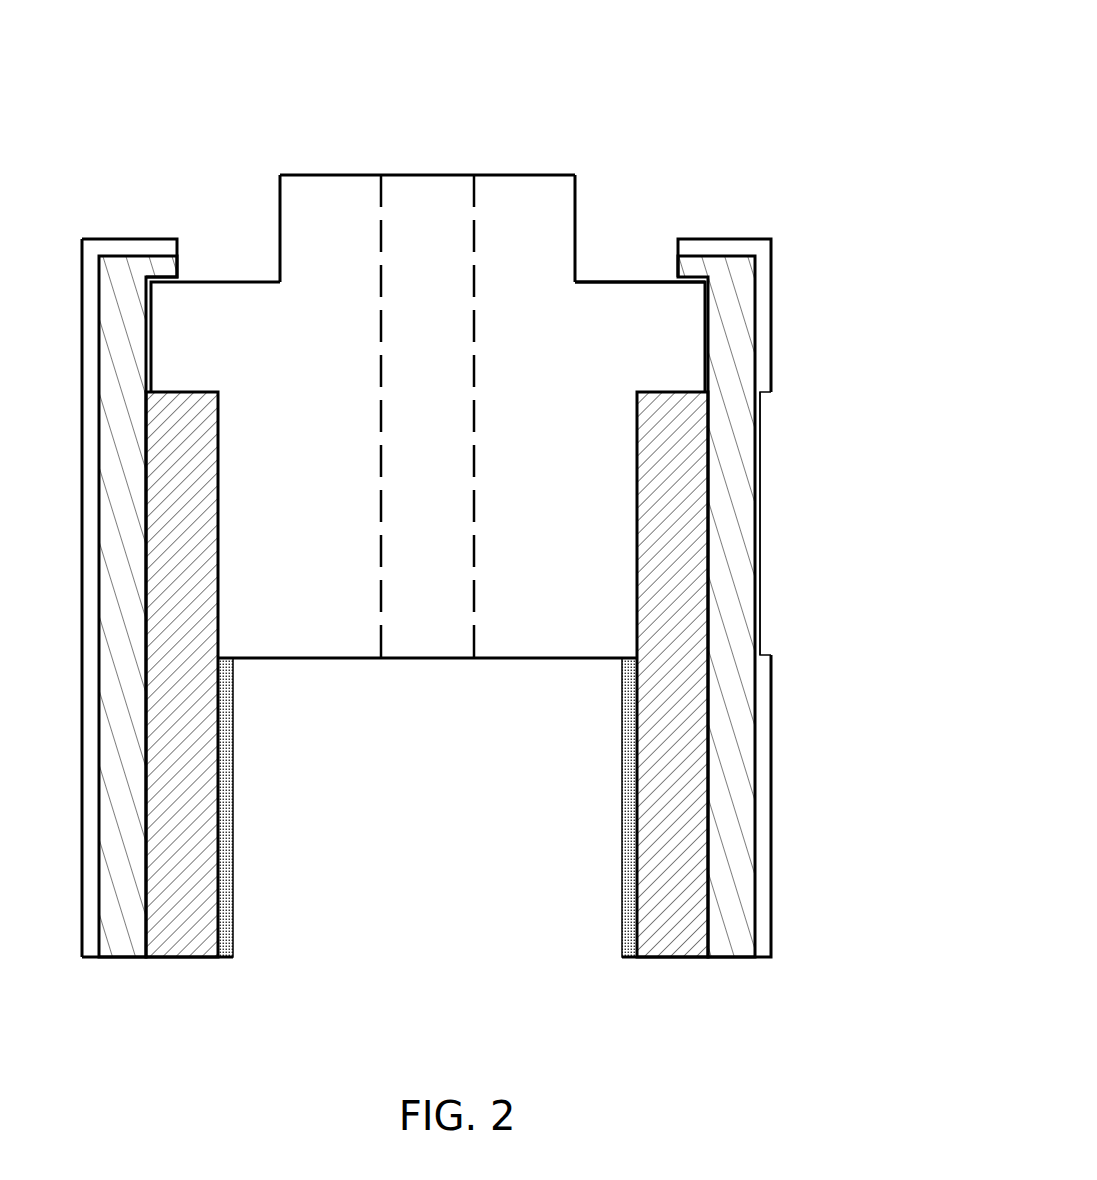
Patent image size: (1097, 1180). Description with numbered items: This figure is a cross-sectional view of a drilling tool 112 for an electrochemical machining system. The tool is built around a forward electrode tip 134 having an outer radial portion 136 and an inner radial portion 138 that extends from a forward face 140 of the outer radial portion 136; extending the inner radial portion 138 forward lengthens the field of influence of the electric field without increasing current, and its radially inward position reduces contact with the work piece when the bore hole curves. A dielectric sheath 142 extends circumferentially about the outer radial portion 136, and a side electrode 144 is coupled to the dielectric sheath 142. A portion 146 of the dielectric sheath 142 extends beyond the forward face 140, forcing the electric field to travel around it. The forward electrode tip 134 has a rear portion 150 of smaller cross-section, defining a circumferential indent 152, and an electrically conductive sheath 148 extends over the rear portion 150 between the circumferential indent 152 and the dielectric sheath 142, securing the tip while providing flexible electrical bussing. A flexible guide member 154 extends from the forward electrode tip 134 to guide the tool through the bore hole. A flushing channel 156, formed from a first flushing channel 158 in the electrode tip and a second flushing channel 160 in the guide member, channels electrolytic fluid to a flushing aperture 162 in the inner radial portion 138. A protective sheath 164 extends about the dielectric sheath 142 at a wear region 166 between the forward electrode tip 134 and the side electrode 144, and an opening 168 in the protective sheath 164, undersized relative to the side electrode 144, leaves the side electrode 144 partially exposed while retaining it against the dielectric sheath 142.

The drilling tool 112 is at (656, 76).
The forward electrode tip 134 is at (645, 192).
The outer radial portion 136 is at (616, 292).
The inner radial portion 138 is at (521, 190).
The forward face 140 is at (650, 281).
The dielectric sheath 142 is at (157, 609).
The side electrode 144 is at (762, 636).
The portion of dielectric sheath 146 is at (179, 265).
The electrically conductive sheath 148 is at (672, 960).
The rear portion 150 is at (533, 638).
The circumferential indent 152 is at (651, 495).
The flexible guide member 154 is at (228, 960).
The flushing channel 156 is at (380, 908).
The first flushing channel 158 is at (399, 484).
The second flushing channel 160 is at (451, 772).
The flushing aperture 162 is at (438, 175).
The protective sheath 164 is at (766, 960).
The wear region 166 is at (809, 244).
The opening 168 is at (784, 394).